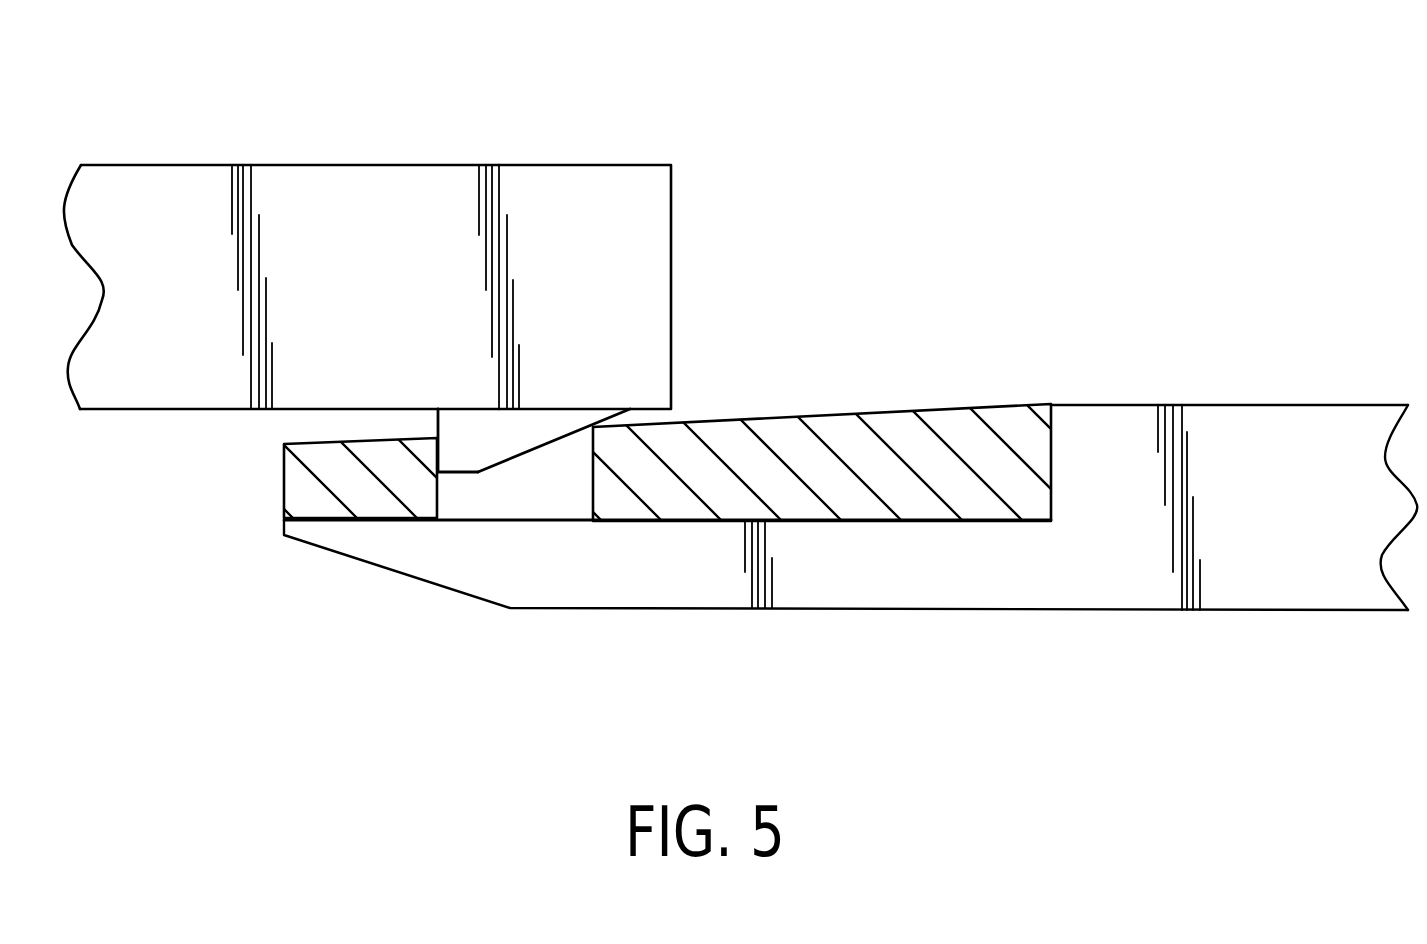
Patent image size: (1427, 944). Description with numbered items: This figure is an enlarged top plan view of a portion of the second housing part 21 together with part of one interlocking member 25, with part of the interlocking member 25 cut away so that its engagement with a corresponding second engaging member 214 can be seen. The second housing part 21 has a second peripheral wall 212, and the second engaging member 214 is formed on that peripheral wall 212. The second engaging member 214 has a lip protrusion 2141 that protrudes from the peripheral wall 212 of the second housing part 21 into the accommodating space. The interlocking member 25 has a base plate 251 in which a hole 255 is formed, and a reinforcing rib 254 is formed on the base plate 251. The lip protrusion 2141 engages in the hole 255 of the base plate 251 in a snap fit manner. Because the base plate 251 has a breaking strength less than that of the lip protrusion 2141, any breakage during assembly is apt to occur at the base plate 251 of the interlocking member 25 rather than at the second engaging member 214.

The second housing part 21 is at (158, 120).
The second peripheral wall 212 is at (570, 208).
The second engaging member 214 is at (542, 479).
The lip protrusion 2141 is at (490, 430).
The interlocking member 25 is at (983, 355).
The base plate 251 is at (852, 442).
The reinforcing rib 254 is at (612, 568).
The hole 255 is at (470, 500).